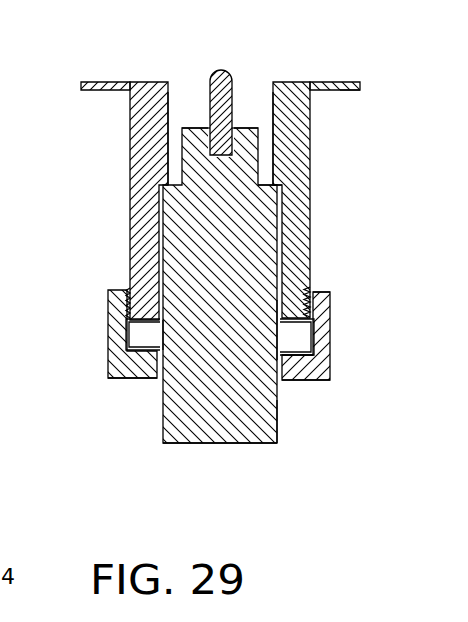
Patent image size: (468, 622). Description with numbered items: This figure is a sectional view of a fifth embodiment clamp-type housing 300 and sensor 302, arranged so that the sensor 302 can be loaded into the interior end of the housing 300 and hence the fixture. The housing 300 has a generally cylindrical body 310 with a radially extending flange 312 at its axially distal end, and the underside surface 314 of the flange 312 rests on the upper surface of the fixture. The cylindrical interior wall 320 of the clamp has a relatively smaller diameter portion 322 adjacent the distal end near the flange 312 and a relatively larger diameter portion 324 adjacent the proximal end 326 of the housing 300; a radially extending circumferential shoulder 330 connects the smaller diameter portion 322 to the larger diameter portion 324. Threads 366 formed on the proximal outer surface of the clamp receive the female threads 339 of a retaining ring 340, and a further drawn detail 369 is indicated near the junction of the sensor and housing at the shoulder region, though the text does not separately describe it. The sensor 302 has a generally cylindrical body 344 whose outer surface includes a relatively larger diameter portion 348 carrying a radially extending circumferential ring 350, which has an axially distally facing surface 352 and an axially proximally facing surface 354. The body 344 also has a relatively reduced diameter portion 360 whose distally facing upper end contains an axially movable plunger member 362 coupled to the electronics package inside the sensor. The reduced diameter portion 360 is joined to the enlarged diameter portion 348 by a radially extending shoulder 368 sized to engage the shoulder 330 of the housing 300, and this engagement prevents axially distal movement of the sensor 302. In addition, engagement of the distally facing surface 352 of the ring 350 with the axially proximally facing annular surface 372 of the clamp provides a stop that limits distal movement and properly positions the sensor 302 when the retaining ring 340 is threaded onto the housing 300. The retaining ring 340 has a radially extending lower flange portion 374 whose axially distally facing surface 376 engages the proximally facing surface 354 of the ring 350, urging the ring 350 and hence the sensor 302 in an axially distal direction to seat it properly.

The housing 300 is at (240, 177).
The sensor 302 is at (181, 471).
The cylindrical body 310 is at (310, 252).
The radially extending flange 312 is at (327, 83).
The underside surface 314 is at (358, 90).
The cylindrical interior wall 320 is at (272, 90).
The smaller diameter portion 322 is at (168, 100).
The larger diameter portion 324 is at (166, 234).
The proximal end 326 is at (138, 333).
The circumferential shoulder 330 is at (249, 276).
The female threads 339 is at (330, 299).
The retaining ring 340 is at (217, 361).
The cylindrical body 344 is at (248, 462).
The larger diameter portion 348 is at (278, 431).
The circumferential ring 350 is at (127, 331).
The axially distally facing surface 352 is at (307, 288).
The axially proximally facing surface 354 is at (288, 364).
The reduced diameter portion 360 is at (272, 134).
The plunger member 362 is at (214, 74).
The left threads 366 is at (130, 290).
The radially extending shoulder 368 is at (262, 185).
The sleeve shoulder 369 is at (282, 186).
The axially proximally facing annular surface 372 is at (276, 328).
The lower flange portion 374 is at (140, 378).
The axially distally facing surface 376 is at (288, 382).